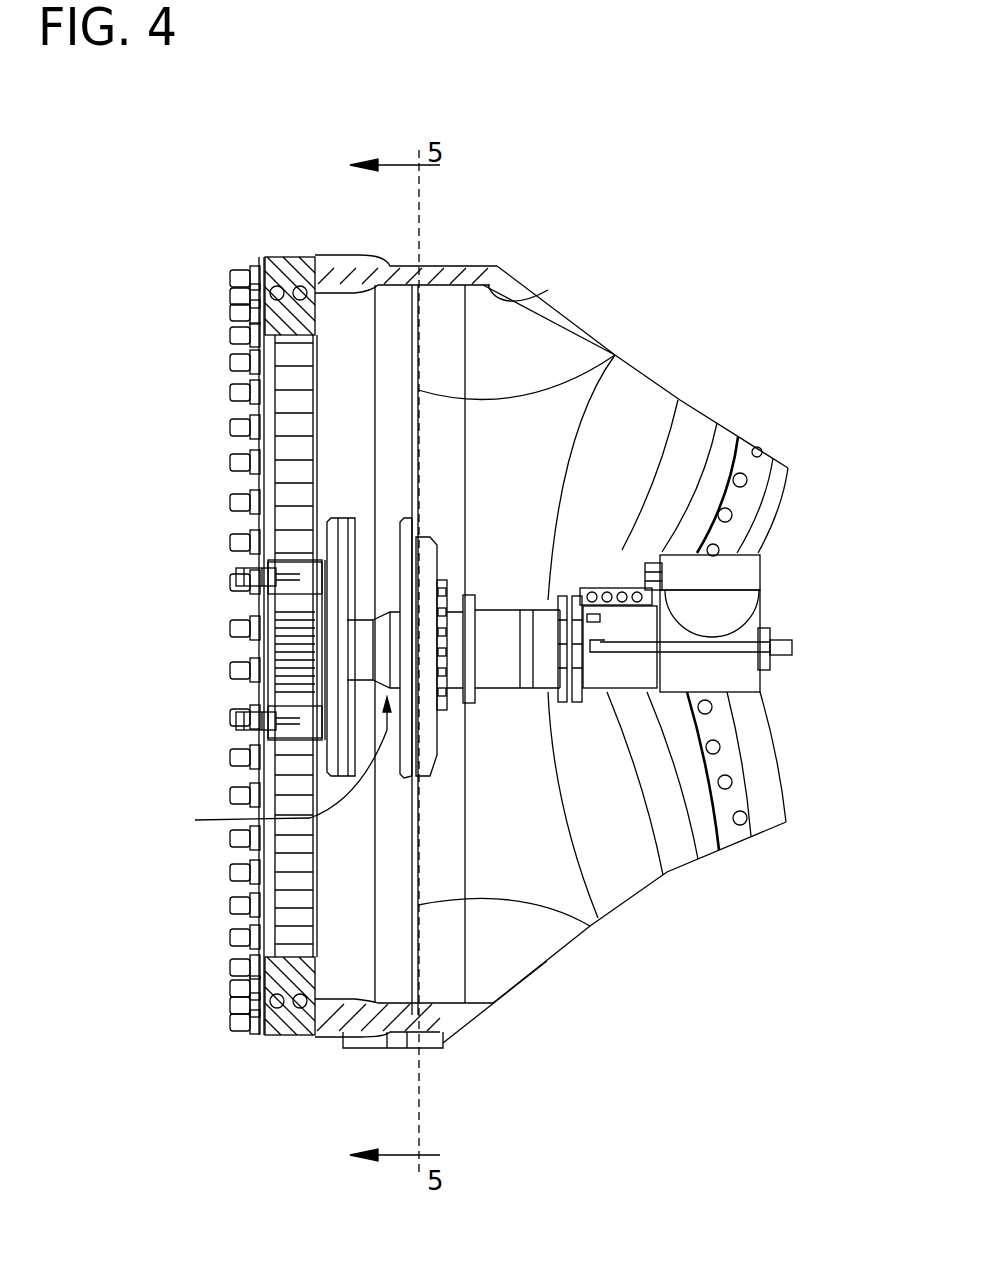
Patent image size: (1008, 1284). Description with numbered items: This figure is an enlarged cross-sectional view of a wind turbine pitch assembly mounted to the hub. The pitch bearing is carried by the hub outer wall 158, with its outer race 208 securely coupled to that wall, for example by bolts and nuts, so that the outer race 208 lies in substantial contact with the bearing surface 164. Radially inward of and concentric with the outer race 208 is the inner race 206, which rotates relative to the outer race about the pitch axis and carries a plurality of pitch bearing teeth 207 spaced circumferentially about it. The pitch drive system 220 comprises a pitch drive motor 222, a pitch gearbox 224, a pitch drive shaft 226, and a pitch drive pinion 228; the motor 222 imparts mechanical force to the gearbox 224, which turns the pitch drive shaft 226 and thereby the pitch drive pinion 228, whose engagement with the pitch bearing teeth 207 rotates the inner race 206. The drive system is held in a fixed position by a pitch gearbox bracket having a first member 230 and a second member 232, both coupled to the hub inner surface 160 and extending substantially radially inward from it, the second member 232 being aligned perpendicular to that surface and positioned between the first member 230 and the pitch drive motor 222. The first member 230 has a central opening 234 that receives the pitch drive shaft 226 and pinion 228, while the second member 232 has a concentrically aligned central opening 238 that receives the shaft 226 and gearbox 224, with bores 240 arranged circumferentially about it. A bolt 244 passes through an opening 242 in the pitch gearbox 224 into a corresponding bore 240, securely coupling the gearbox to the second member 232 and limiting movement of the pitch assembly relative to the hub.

The hub outer wall 158 is at (458, 268).
The hub inner surface 160 is at (505, 298).
The bearing surface 164 is at (302, 258).
The inner race 206 is at (262, 988).
The pitch bearing teeth 207 is at (303, 388).
The outer race 208 is at (262, 262).
The pitch drive system 220 is at (792, 545).
The pitch drive motor 222 is at (750, 568).
The pitch gearbox 224 is at (512, 672).
The pitch drive shaft 226 is at (264, 767).
The pitch drive pinion 228 is at (320, 570).
The first member 230 is at (343, 517).
The second member 232 is at (420, 778).
The central opening 234 is at (330, 560).
The central opening 238 is at (470, 605).
The bores 240 is at (432, 745).
The opening 242 is at (463, 596).
The bolt 244 is at (442, 665).